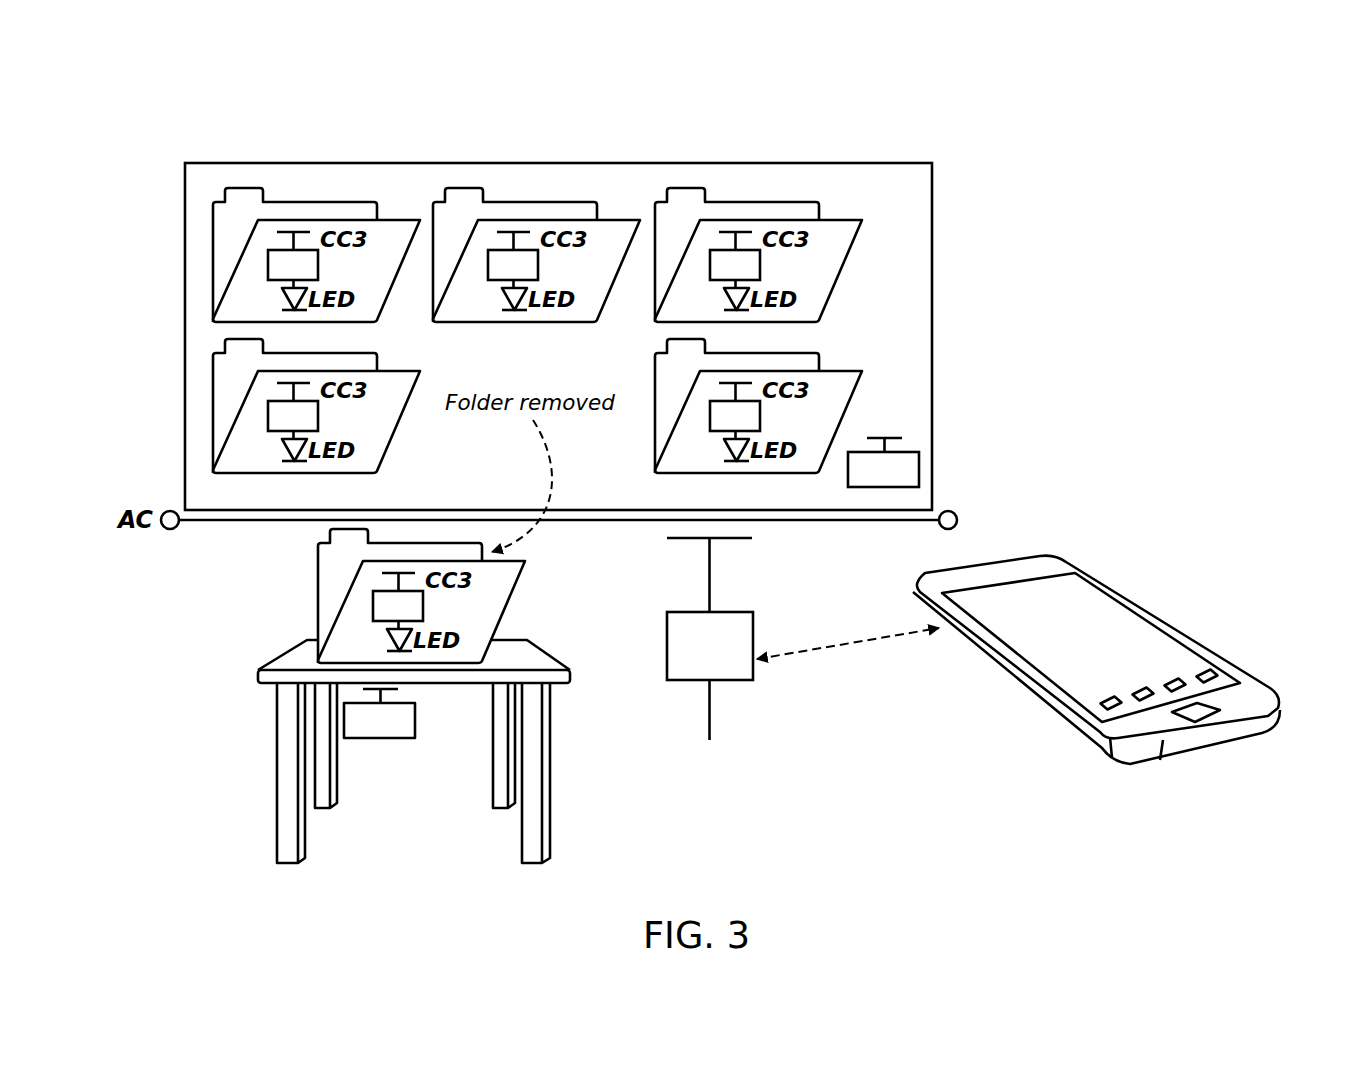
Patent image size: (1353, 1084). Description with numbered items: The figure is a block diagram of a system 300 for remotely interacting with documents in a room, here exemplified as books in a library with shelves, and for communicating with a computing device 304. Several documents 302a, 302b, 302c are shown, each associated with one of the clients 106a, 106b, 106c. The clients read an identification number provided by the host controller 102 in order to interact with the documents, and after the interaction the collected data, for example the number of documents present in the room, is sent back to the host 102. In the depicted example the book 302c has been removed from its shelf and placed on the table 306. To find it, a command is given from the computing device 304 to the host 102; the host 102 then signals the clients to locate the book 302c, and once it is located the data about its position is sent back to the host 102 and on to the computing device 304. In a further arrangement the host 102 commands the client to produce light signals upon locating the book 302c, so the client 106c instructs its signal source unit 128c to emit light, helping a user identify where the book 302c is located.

The system 300 is at (273, 110).
The document 302a is at (835, 219).
The document 302b is at (536, 219).
The document 302c is at (386, 605).
The client 106a is at (760, 265).
The client 106b is at (492, 243).
The client 106c is at (420, 607).
The signal source unit 128c is at (387, 636).
The host controller 102 is at (753, 630).
The computing device 304 is at (1093, 572).
The table 306 is at (277, 833).